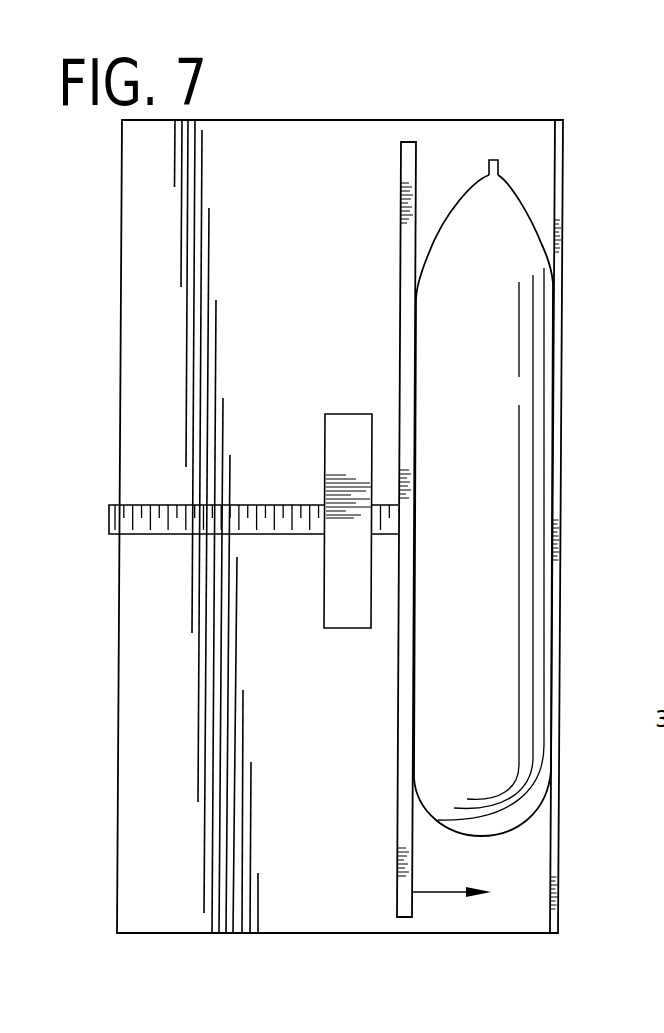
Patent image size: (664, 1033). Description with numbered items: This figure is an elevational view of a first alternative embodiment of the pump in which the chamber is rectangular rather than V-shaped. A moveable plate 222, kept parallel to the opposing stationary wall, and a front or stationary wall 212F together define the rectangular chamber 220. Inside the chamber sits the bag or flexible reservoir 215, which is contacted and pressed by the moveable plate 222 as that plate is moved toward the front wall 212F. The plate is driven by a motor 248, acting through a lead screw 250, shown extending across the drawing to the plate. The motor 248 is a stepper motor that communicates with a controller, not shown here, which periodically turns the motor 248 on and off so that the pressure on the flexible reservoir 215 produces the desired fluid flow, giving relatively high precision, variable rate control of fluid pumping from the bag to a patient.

The front or stationary wall 212F is at (558, 188).
The bag or flexible reservoir 215 is at (515, 426).
The rectangular chamber 220 is at (510, 140).
The moveable plate 222 is at (412, 142).
The motor 248 is at (345, 607).
The lead screw 250 is at (253, 518).